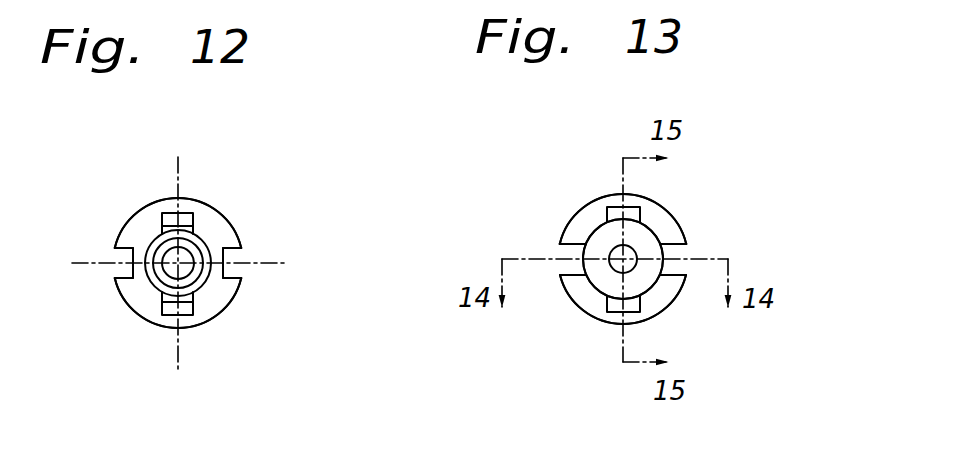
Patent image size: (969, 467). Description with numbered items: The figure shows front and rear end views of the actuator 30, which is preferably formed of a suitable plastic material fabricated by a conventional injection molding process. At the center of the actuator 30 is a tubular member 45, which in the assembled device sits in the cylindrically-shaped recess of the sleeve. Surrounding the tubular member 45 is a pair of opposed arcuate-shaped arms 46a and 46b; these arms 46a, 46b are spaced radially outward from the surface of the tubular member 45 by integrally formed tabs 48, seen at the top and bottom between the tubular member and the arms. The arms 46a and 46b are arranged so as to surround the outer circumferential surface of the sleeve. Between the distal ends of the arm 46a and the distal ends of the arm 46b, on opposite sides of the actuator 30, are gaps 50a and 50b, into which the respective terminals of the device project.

In FIG. 12, the actuator 30 is at (227, 343).
In FIG. 13, the actuator 30 is at (468, 163).
In FIG. 13, the tubular member 45 is at (588, 285).
In FIG. 12, the arcuate-shaped arm 46a is at (205, 197).
In FIG. 13, the arcuate-shaped arm 46a is at (660, 203).
In FIG. 12, the arcuate-shaped arm 46b is at (155, 330).
In FIG. 13, the arcuate-shaped arm 46b is at (668, 312).
In FIG. 12, the tab 48 is at (172, 223).
In FIG. 13, the tab 48 is at (605, 208).
In FIG. 12, the gap 50a is at (233, 263).
In FIG. 13, the gap 50a is at (558, 250).
In FIG. 12, the gap 50b is at (120, 253).
In FIG. 13, the gap 50b is at (680, 252).